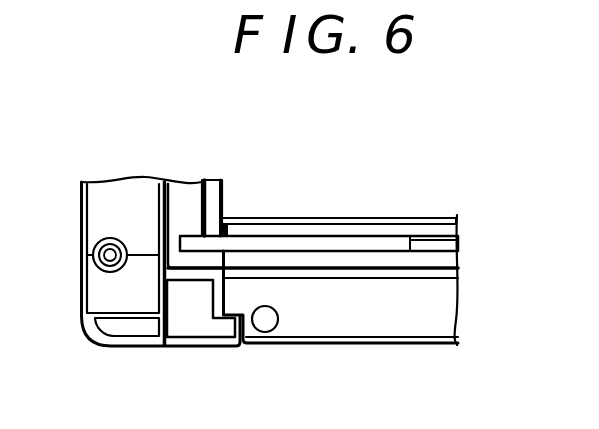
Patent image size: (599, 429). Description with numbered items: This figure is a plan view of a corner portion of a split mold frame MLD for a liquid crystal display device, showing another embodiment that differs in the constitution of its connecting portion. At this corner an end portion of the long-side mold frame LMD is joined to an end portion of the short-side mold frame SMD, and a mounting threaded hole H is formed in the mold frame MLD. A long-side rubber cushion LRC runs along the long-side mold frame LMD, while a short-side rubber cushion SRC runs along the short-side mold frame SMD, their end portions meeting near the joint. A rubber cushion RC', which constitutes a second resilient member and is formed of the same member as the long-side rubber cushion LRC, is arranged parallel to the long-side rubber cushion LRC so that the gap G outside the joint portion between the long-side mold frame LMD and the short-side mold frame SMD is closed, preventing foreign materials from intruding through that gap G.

The short-side mold frame SMD is at (115, 198).
The short-side rubber cushion SRC is at (210, 188).
The mold frame MLD is at (318, 218).
The long-side rubber cushion LRC is at (458, 230).
The rubber cushion RC' is at (366, 261).
The long-side mold frame LMD is at (445, 315).
The mounting threaded hole H is at (104, 271).
The gap G is at (223, 293).